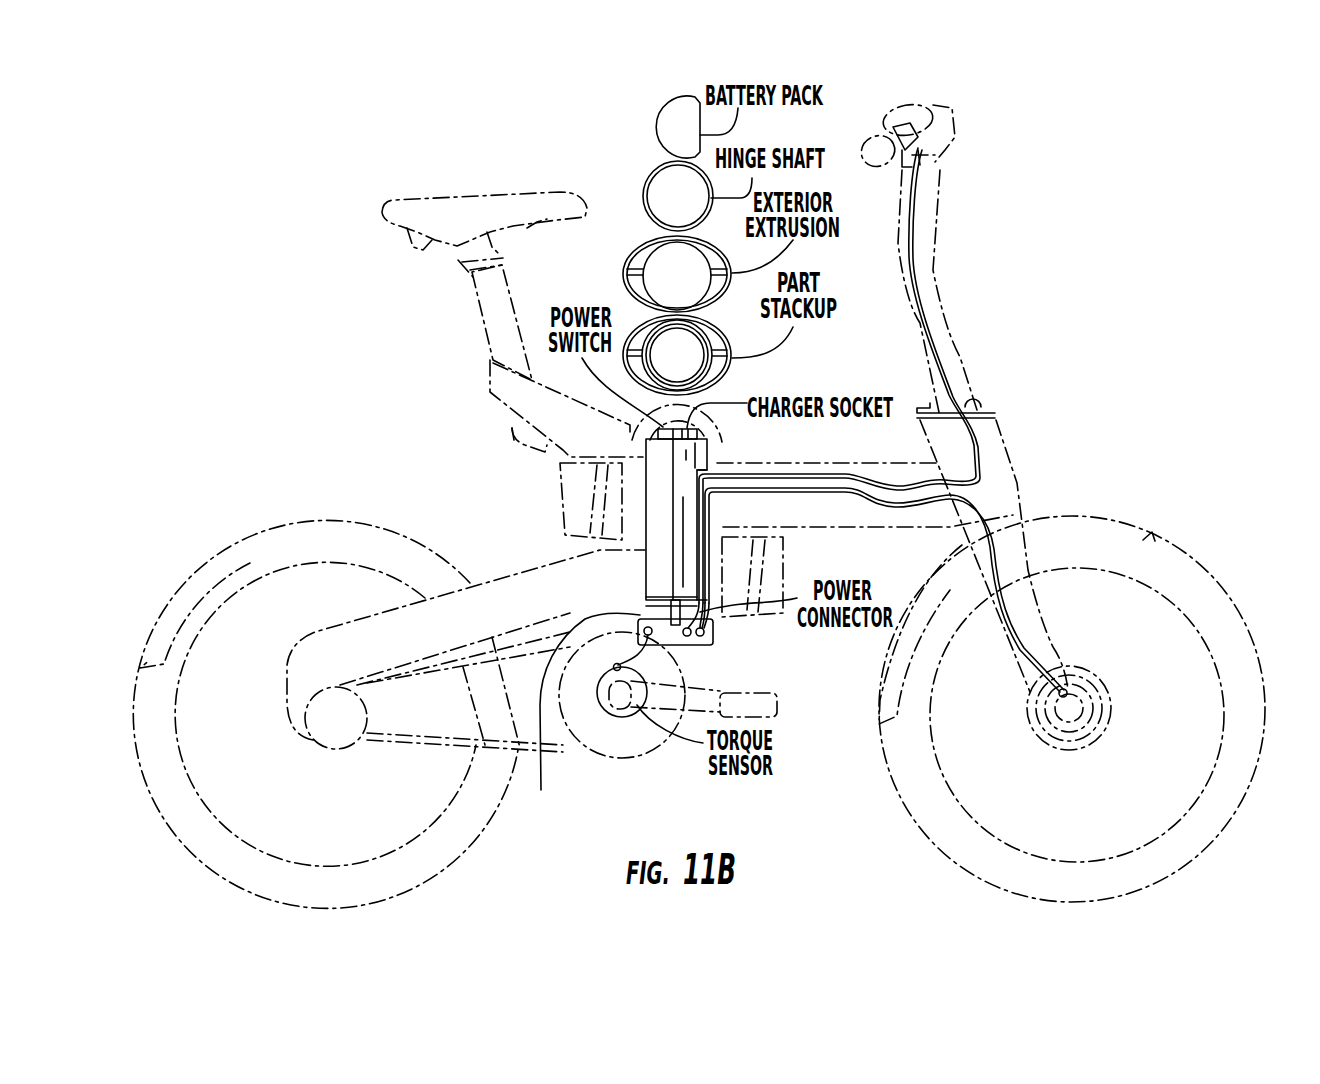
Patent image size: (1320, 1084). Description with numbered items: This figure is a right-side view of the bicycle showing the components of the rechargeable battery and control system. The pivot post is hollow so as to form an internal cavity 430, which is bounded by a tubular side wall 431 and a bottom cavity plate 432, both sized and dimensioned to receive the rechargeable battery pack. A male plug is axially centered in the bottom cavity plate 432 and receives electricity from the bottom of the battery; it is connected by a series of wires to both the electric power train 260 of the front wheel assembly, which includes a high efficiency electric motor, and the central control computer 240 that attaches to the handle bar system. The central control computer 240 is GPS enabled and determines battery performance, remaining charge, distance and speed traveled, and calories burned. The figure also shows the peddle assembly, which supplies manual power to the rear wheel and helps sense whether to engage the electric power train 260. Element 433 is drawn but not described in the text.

The central control computer 240 is at (893, 143).
The electric power train 260 is at (707, 642).
The internal cavity 430 is at (700, 570).
The tubular side wall 431 is at (655, 518).
The bottom cavity plate 432 is at (550, 647).
The power connector block 433 is at (705, 637).